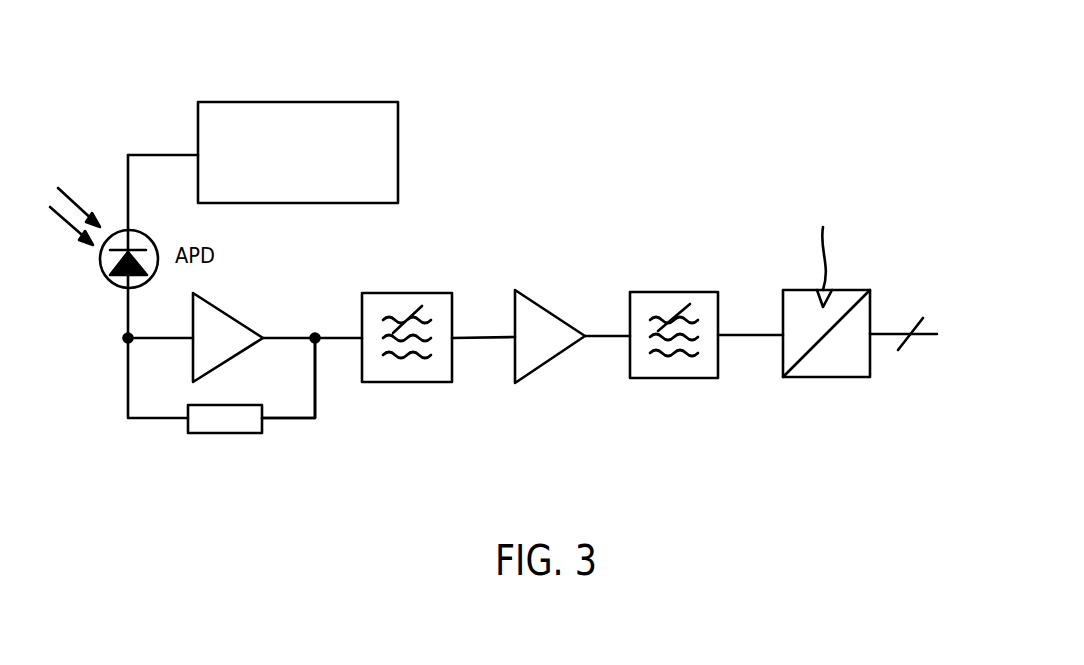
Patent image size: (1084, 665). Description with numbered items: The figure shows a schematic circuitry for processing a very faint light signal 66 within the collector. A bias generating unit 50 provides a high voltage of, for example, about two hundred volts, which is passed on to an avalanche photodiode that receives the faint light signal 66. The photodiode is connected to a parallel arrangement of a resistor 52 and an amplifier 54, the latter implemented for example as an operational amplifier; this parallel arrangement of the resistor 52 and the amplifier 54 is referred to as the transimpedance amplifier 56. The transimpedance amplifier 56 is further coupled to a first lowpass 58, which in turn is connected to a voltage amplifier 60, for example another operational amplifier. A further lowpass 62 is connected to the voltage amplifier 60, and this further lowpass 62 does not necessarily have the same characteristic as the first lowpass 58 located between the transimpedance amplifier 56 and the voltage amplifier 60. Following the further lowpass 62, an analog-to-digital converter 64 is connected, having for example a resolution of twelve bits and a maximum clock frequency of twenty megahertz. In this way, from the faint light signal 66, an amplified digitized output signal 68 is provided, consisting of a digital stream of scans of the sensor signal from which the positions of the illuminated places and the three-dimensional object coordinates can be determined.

The bias voltage supply / control unit 50 is at (307, 102).
The resistor 52 is at (237, 433).
The amplifier 54 is at (193, 365).
The transimpedance amplifier 56 is at (316, 435).
The first lowpass 58 is at (415, 293).
The voltage amplifier 60 is at (548, 358).
The further lowpass 62 is at (673, 378).
The analog-to-digital converter 64 is at (823, 377).
The faint light signal 66 is at (80, 200).
The amplified digitized output signal 68 is at (922, 337).